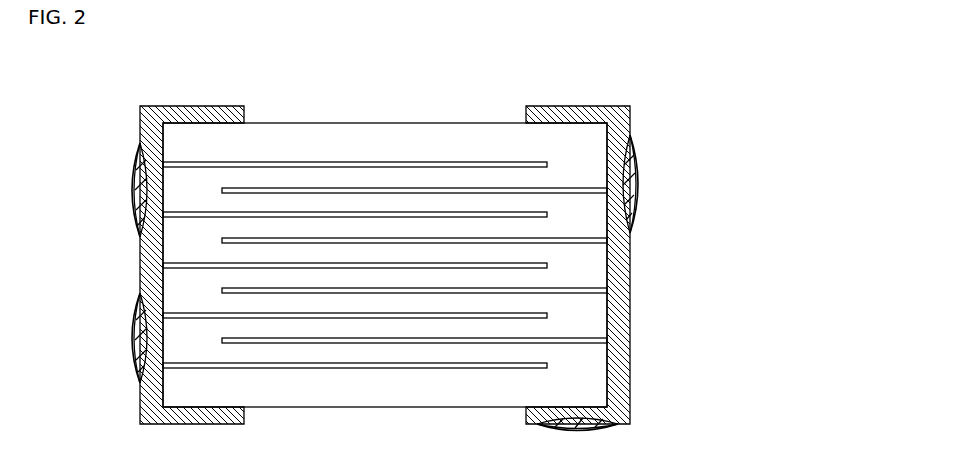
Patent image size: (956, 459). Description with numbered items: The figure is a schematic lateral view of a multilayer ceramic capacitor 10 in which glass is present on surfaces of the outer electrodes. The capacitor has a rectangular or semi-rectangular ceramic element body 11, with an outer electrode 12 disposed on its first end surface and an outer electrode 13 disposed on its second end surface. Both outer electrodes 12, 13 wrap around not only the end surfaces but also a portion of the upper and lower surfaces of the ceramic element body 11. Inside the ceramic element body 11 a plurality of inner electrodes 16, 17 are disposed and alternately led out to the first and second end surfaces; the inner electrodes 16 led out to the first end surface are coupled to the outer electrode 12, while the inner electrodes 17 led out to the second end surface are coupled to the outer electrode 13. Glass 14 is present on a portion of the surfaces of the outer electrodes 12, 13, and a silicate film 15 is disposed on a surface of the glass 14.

The multilayer ceramic capacitor 10 is at (658, 92).
The ceramic element body 11 is at (288, 138).
The outer electrode 12 is at (183, 113).
The outer electrode 13 is at (567, 115).
The glass 14 is at (143, 323).
The silicate film 15 is at (148, 345).
The inner electrodes 16 is at (368, 163).
The inner electrodes 17 is at (425, 189).